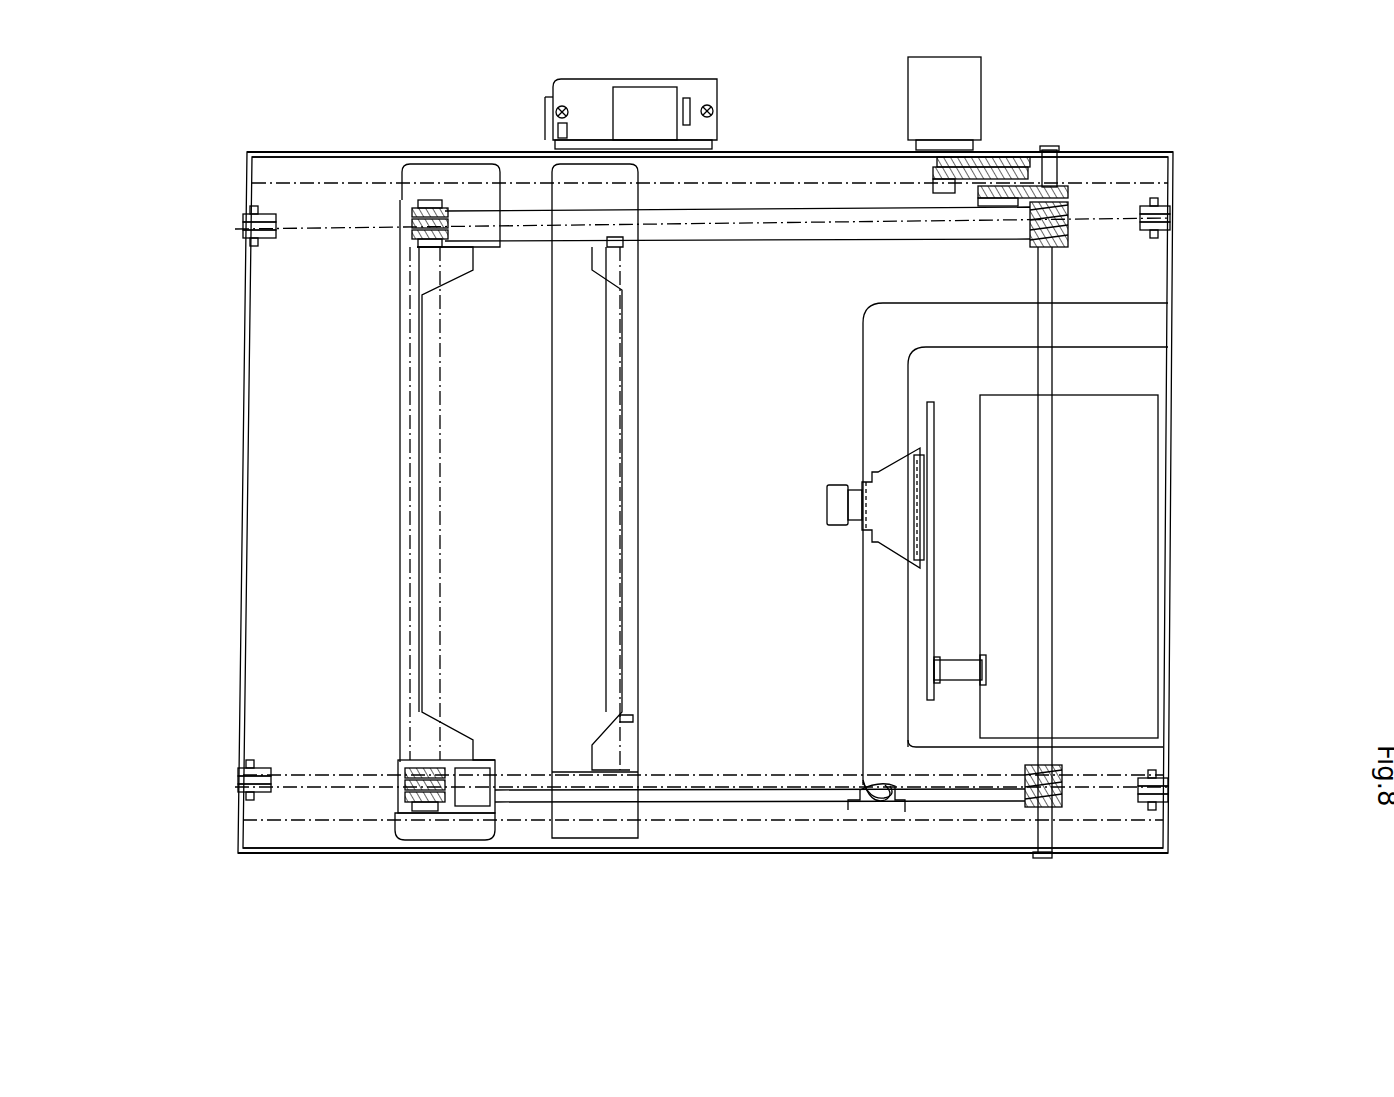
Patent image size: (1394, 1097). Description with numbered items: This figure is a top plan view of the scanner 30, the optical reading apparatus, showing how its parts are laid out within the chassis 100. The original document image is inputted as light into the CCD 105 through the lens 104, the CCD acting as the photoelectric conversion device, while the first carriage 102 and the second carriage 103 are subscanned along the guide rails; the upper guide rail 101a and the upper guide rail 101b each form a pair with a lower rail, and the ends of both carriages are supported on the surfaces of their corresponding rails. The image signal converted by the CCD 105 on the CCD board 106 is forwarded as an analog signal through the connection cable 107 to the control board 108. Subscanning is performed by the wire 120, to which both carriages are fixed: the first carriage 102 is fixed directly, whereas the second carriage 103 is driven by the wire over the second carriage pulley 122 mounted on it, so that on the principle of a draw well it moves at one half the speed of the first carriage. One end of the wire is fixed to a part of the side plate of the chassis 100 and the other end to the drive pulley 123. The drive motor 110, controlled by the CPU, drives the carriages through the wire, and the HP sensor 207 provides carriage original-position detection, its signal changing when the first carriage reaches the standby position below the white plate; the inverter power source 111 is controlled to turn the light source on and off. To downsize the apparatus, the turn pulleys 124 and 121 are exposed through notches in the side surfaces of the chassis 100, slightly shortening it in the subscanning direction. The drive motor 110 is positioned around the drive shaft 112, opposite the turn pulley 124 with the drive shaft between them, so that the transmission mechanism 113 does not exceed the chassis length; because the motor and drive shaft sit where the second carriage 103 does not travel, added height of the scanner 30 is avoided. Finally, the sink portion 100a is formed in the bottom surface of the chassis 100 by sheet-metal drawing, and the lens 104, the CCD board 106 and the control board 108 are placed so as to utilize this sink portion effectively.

The scanner 30 is at (1185, 130).
The chassis 100 is at (1135, 270).
The sink portion 100a is at (928, 372).
The upper guide rail 101a is at (250, 835).
The upper guide rail 101b is at (262, 172).
The first carriage 102 is at (560, 335).
The second carriage 103 is at (460, 172).
The lens 104 is at (832, 505).
The CCD 105 is at (920, 578).
The CCD board 106 is at (930, 638).
The connection cable 107 is at (958, 676).
The control board 108 is at (1150, 470).
The drive motor 110 is at (920, 92).
The inverter power source 111 is at (655, 100).
The drive shaft 112 is at (1045, 265).
The transmission mechanism 113 is at (1015, 148).
The wire 120 is at (342, 232).
The turn pulley 121 is at (262, 248).
The second carriage pulley 122 is at (440, 218).
The drive pulley 123 is at (1068, 235).
The turn pulley 124 is at (1160, 213).
The HP sensor 207 is at (312, 172).